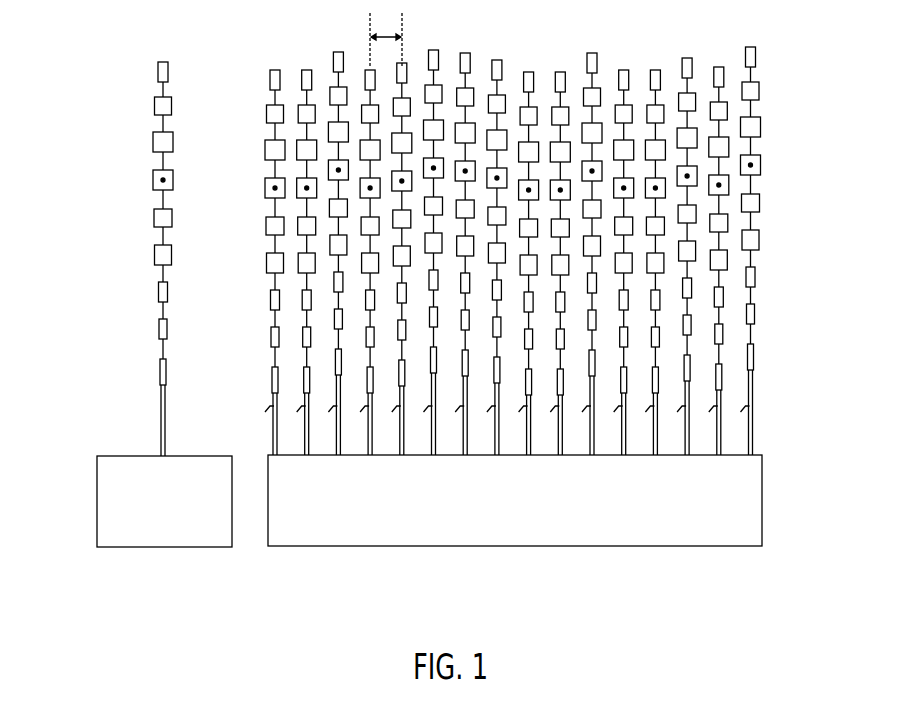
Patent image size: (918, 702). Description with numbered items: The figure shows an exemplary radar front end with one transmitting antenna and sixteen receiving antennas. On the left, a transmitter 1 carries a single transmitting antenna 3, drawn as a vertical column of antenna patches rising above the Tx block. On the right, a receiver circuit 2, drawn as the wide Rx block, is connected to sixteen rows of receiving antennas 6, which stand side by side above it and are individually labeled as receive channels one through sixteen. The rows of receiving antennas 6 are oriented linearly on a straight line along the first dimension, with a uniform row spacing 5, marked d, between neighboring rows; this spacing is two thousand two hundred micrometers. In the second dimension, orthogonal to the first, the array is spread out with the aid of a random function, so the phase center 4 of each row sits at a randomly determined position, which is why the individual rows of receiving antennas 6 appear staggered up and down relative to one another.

The transmitter 1 is at (122, 512).
The receiver circuit 2 is at (727, 524).
The transmitting antenna 3 is at (155, 258).
The phase center 4 is at (752, 170).
The row spacing 5 is at (380, 48).
The row of receiving antennas 6 is at (540, 240).